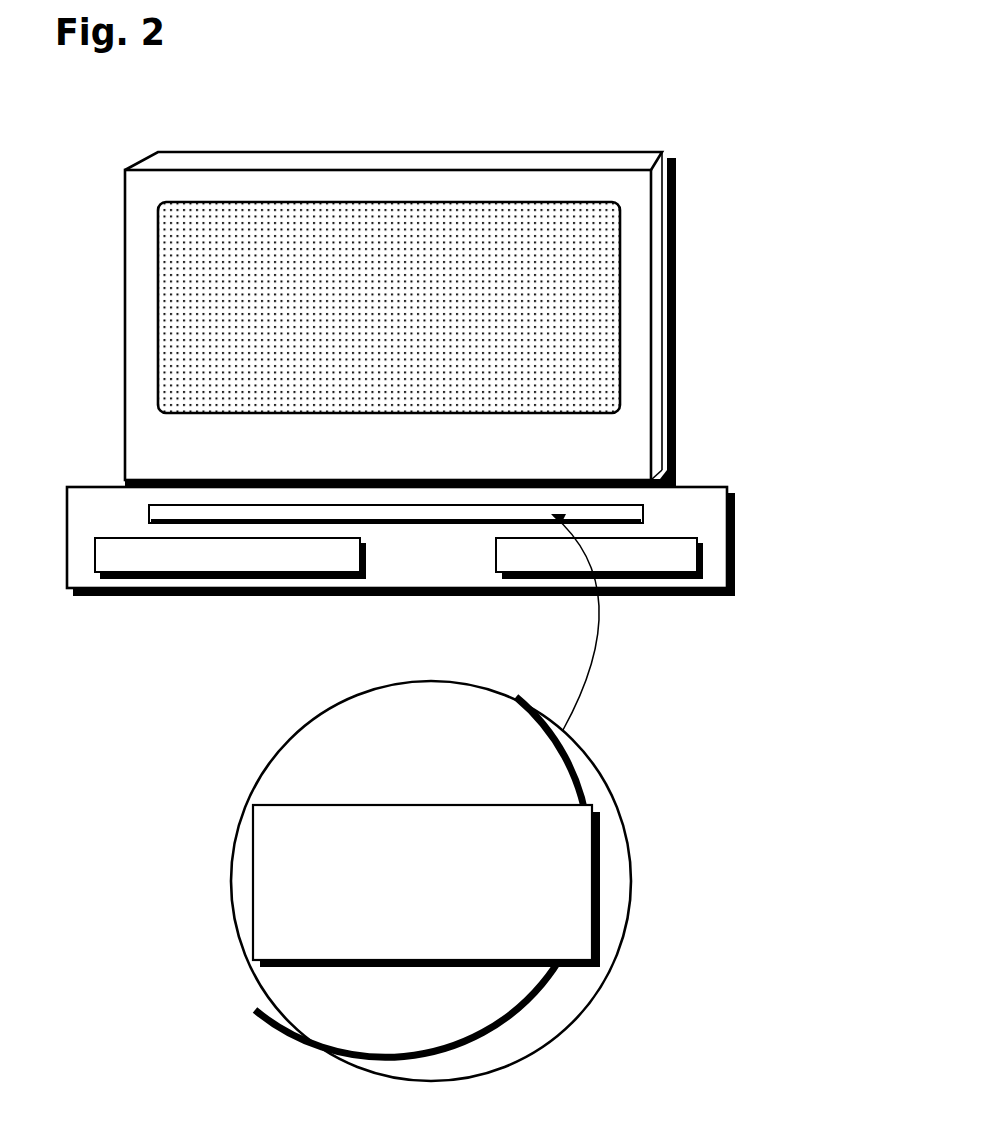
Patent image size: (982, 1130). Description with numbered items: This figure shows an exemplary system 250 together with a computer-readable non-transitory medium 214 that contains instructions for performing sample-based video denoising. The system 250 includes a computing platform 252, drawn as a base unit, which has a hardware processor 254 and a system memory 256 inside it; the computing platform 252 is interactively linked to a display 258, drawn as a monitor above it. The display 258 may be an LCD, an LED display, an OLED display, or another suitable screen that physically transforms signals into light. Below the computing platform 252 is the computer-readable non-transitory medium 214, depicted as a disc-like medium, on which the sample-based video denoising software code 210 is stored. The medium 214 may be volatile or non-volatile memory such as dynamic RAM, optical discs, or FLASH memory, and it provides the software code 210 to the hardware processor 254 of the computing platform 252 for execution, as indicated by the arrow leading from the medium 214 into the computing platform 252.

The system 250 is at (786, 60).
The computing platform 252 is at (735, 538).
The hardware processor 254 is at (366, 552).
The system memory 256 is at (665, 538).
The display 258 is at (481, 152).
The computer-readable non-transitory medium 214 is at (230, 874).
The sample-based video denoising software code 210 is at (440, 968).